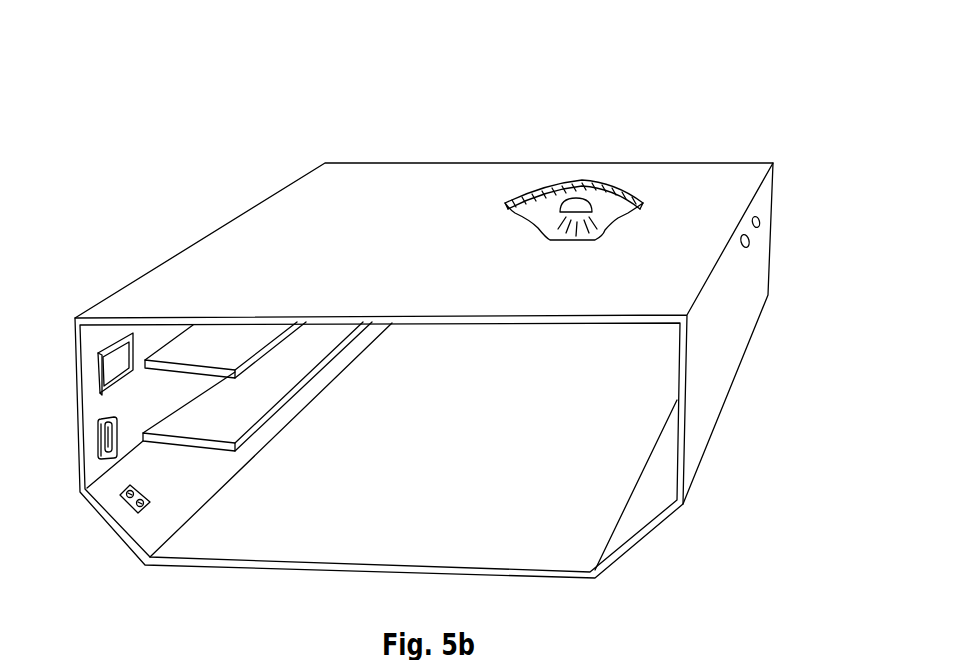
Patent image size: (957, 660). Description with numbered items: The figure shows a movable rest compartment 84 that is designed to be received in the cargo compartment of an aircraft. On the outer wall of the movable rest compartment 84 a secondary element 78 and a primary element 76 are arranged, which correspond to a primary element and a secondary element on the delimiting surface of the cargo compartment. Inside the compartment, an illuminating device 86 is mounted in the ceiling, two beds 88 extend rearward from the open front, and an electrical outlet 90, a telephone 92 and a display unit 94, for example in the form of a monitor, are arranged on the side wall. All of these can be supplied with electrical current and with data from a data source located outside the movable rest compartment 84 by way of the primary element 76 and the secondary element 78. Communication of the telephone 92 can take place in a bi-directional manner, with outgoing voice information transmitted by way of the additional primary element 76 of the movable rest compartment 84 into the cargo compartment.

The movable rest compartment 84 is at (474, 132).
The illuminating device 86 is at (578, 203).
The beds 88 is at (237, 333).
The electrical outlet 90 is at (125, 505).
The telephone 92 is at (113, 440).
The display unit 94 is at (118, 360).
The secondary element 78 is at (758, 226).
The primary element 76 is at (746, 247).